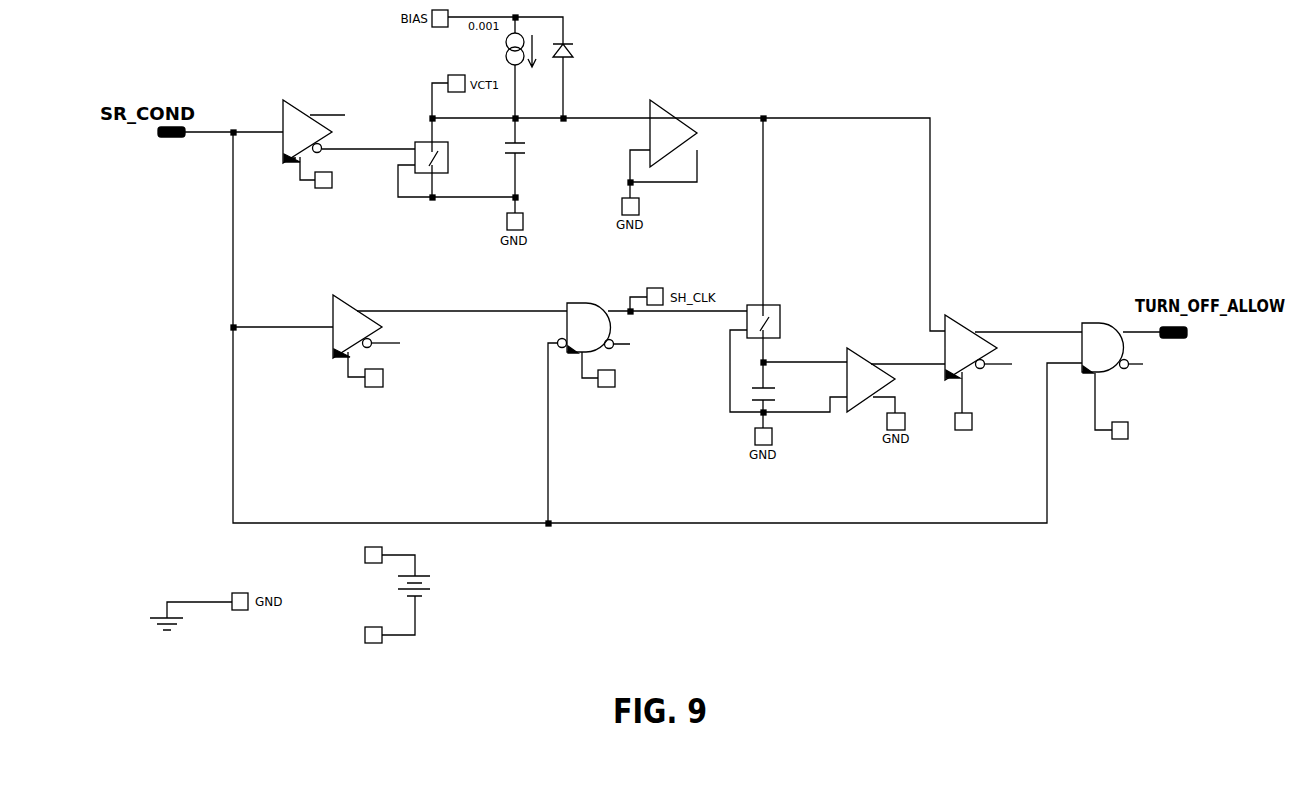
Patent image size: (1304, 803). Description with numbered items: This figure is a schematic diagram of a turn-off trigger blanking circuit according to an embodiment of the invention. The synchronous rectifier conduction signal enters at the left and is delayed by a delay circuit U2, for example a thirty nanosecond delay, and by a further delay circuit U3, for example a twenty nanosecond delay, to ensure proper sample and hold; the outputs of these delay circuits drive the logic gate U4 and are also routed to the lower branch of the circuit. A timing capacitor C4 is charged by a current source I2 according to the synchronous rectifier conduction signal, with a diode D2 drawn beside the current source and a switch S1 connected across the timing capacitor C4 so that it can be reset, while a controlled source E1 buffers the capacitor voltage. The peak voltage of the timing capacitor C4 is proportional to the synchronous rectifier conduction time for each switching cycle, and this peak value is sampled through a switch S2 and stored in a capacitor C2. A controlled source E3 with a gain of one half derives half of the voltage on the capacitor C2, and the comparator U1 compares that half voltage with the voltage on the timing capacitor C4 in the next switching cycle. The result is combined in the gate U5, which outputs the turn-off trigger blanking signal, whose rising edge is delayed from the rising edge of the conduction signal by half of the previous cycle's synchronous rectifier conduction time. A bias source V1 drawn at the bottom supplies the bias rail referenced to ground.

The delay circuit U2 is at (324, 136).
The delay circuit U3 is at (450, 332).
The AND gate U4 is at (598, 405).
The gate U5 is at (1122, 367).
The comparator U1 is at (978, 372).
The current source I2 is at (506, 50).
The diode D2 is at (592, 52).
The switch S1 is at (451, 152).
The switch S2 is at (767, 318).
The timing capacitor C4 is at (532, 150).
The capacitor C2 is at (780, 394).
The voltage controlled voltage source E1 is at (663, 133).
The voltage controlled voltage source E3 is at (829, 380).
The voltage source V1 is at (393, 595).